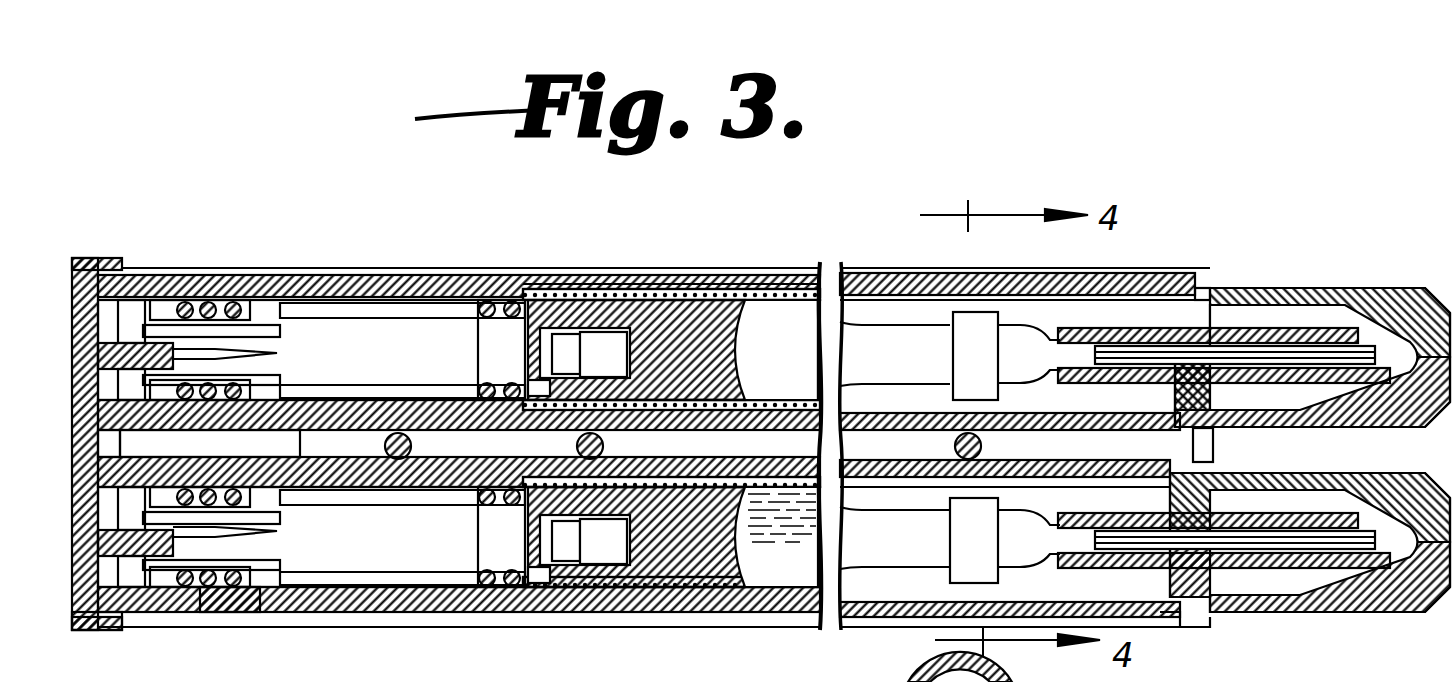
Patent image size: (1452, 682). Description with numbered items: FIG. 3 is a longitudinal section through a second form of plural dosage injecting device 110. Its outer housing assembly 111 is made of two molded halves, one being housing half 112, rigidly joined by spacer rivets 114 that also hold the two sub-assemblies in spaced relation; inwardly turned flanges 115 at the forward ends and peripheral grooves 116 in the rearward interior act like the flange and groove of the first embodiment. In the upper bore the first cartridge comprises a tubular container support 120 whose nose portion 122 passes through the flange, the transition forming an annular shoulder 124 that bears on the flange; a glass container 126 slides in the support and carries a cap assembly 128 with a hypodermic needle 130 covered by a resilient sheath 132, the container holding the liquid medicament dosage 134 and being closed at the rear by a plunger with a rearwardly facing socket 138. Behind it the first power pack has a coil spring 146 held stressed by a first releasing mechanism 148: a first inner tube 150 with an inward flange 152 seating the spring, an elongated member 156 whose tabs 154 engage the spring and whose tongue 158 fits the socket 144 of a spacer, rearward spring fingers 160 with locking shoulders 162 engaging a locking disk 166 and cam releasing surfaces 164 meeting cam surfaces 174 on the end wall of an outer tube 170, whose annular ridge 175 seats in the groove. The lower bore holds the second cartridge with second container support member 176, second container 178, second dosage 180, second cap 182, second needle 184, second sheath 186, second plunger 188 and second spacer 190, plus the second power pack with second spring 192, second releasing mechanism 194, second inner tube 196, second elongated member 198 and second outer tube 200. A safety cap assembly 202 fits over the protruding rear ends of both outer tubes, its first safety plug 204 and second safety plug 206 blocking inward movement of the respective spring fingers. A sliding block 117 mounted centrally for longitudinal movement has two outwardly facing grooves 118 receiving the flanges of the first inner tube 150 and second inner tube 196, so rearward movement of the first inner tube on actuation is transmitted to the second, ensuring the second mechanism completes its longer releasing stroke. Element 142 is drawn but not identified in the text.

The plural dosage injecting device 110 is at (788, 210).
The outer housing assembly 111 is at (402, 250).
The outer housing half 112 is at (540, 290).
The spacer rivets 114 is at (412, 447).
The inwardly turned flanges 115 is at (1212, 284).
The peripheral grooves 116 is at (270, 612).
The sliding block 117 is at (470, 480).
The grooves 118 is at (485, 392).
The first container support 120 is at (608, 290).
The nose portion 122 is at (1333, 302).
The annular shoulder 124 is at (1214, 434).
The first container 126 is at (692, 290).
The cap assembly 128 is at (975, 312).
The hypodermic needle 130 is at (1358, 316).
The sheath 132 is at (1150, 340).
The liquid medicament dosage 134 is at (795, 320).
The socket 138 is at (720, 358).
The valve 142 is at (652, 358).
The socket 144 is at (565, 340).
The first coil spring 146 is at (215, 300).
The first releasing mechanism 148 is at (332, 268).
The first inner tube 150 is at (500, 300).
The flange 152 is at (278, 332).
The tabs 154 is at (530, 385).
The elongated member 156 is at (404, 366).
The tongue 158 is at (561, 354).
The spring fingers 160 is at (279, 380).
The locking shoulders 162 is at (165, 300).
The cam releasing surfaces 164 is at (225, 430).
The locking disk 166 is at (209, 386).
The outer tube 170 is at (440, 290).
The cam surfaces 174 is at (105, 446).
The annular ridge 175 is at (245, 300).
The second container support member 176 is at (1176, 626).
The second container 178 is at (868, 612).
The second dosage 180 is at (838, 506).
The second cap 182 is at (950, 542).
The second needle 184 is at (1258, 492).
The second sheath 186 is at (1362, 496).
The second plunger 188 is at (665, 600).
The second spacer 190 is at (560, 602).
The second spring 192 is at (230, 612).
The second releasing mechanism 194 is at (405, 622).
The second inner tube 196 is at (356, 598).
The second elongated member 198 is at (350, 552).
The second outer tube 200 is at (140, 625).
The safety cap assembly 202 is at (98, 252).
The first safety plug 204 is at (279, 353).
The second safety plug 206 is at (279, 531).